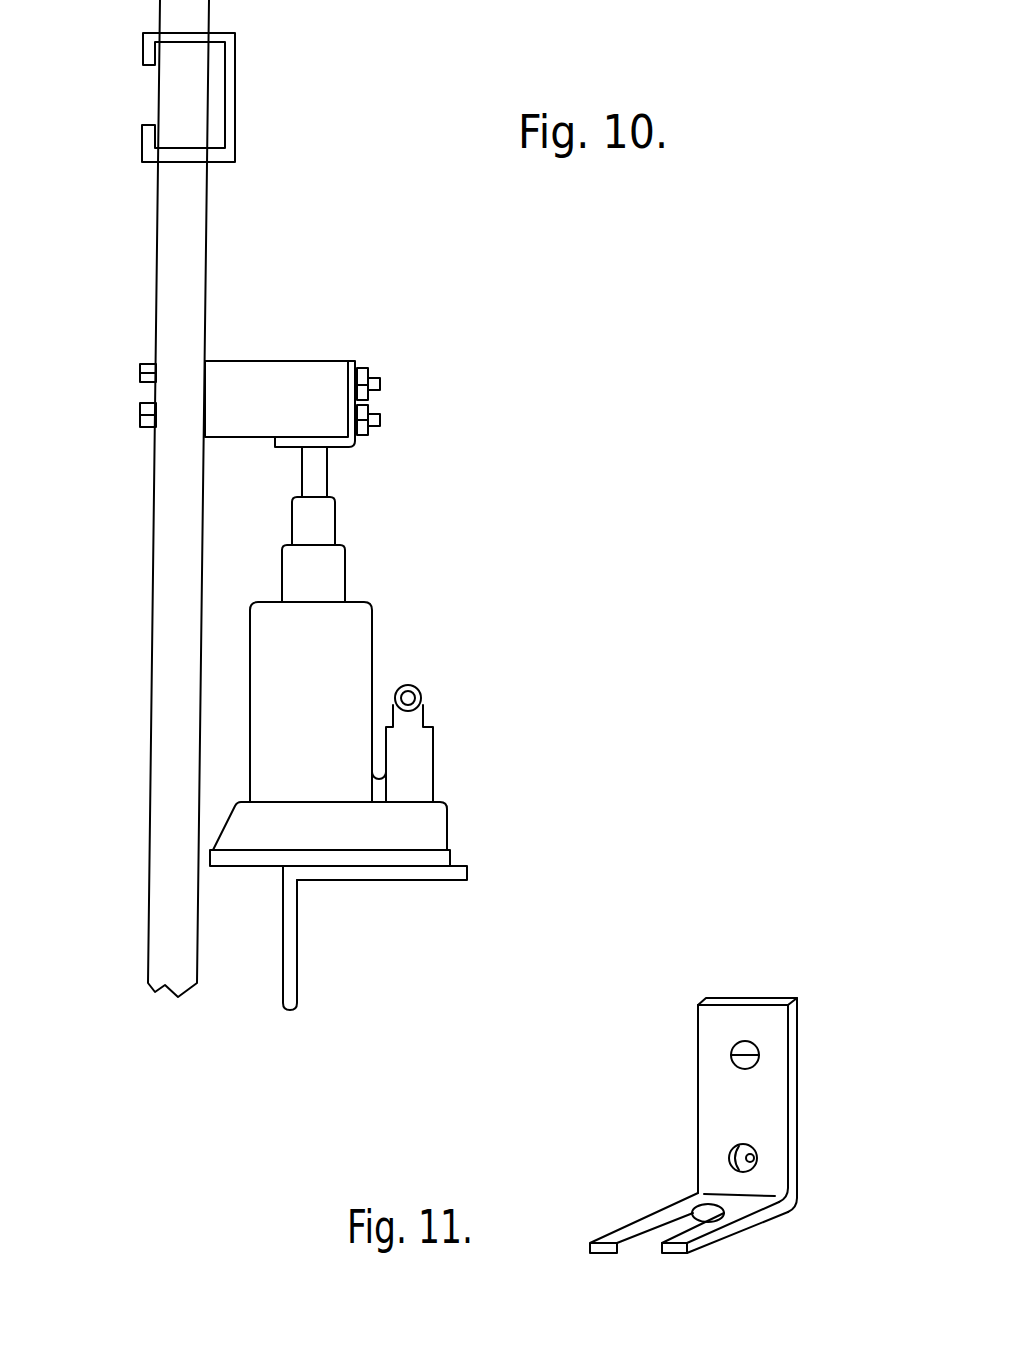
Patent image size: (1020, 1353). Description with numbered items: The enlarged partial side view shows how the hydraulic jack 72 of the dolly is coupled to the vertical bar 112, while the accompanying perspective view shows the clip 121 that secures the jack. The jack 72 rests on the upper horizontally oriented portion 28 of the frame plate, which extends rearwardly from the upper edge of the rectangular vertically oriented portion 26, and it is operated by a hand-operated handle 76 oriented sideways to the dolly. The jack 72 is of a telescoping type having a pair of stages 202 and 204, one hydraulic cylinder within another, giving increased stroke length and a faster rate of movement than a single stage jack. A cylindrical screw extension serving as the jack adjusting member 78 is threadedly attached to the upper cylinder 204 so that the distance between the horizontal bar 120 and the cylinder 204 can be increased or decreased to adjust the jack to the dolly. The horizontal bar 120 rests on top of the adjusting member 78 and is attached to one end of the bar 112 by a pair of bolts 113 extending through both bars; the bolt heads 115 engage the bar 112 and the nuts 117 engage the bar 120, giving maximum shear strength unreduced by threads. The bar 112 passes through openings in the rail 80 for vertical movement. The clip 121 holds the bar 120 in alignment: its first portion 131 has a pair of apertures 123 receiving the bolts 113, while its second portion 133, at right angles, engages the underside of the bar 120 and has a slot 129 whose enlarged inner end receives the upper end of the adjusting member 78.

In FIG. 10, the rectangular vertically oriented portion 26 is at (298, 977).
In FIG. 10, the upper horizontally oriented portion 28 is at (410, 881).
In FIG. 10, the hydraulic jack 72 is at (318, 706).
In FIG. 10, the hand-operated handle 76 is at (418, 688).
In FIG. 10, the jack adjusting member 78 is at (328, 480).
In FIG. 10, the rail 80 is at (236, 82).
In FIG. 10, the bar 112 is at (150, 628).
In FIG. 10, the bolts 113 is at (369, 388).
In FIG. 10, the bolt heads 115 is at (140, 373).
In FIG. 10, the nuts 117 is at (380, 382).
In FIG. 10, the horizontal bar 120 is at (245, 368).
In FIG. 10, the clip 121 is at (287, 407).
In FIG. 11, the clip 121 is at (745, 1100).
In FIG. 11, the apertures 123 is at (730, 1053).
In FIG. 11, the slot 129 is at (645, 1245).
In FIG. 10, the first portion 131 is at (353, 362).
In FIG. 11, the first portion 131 is at (744, 1105).
In FIG. 10, the second portion 133 is at (305, 452).
In FIG. 11, the second portion 133 is at (716, 1248).
In FIG. 10, the first stage 202 is at (347, 574).
In FIG. 10, the upper cylinder 204 is at (337, 520).